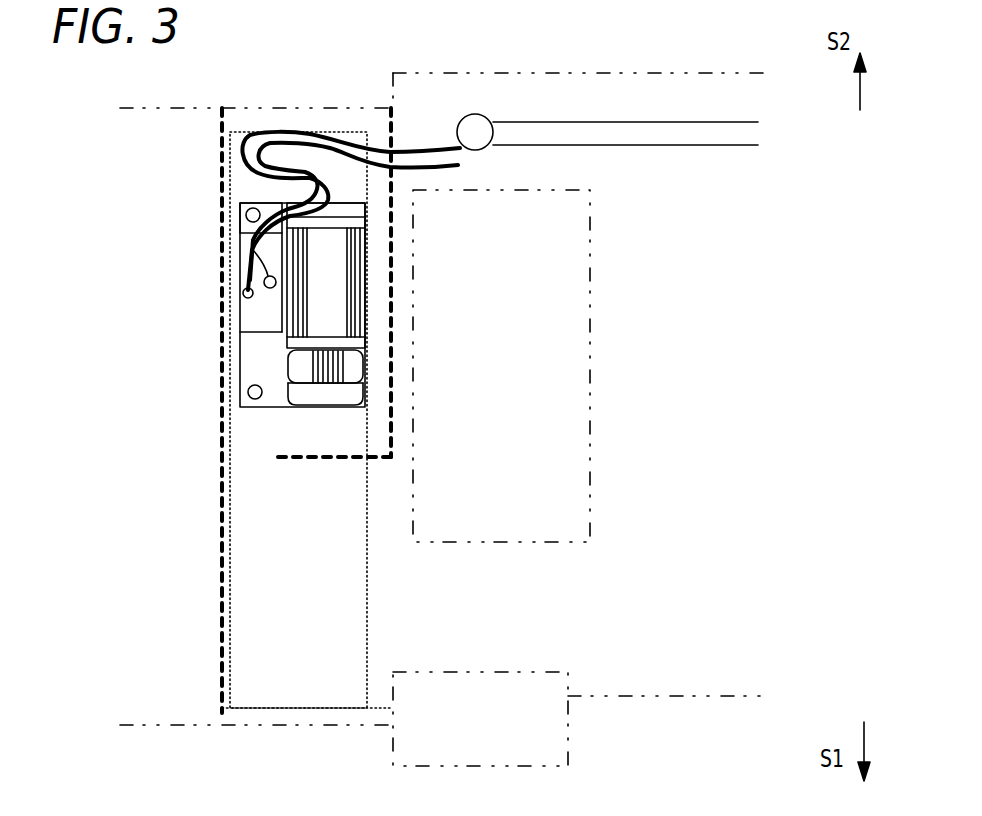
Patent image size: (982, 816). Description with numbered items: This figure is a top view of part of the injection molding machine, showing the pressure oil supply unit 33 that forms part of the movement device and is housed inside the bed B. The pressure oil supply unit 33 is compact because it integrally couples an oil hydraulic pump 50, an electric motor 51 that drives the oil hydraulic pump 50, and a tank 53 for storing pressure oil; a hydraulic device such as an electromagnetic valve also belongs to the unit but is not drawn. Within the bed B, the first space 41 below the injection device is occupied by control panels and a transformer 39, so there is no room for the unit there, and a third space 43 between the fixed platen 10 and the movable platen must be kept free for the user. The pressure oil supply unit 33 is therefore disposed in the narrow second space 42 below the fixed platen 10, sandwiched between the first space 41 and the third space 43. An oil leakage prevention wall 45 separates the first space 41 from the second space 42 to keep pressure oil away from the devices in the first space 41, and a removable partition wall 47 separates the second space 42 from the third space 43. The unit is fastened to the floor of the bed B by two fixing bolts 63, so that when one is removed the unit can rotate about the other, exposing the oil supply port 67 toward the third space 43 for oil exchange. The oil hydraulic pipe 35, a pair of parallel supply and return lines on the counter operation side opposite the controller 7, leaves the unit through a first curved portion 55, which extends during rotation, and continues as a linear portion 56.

The controller 7 is at (555, 738).
The fixed platen 10 is at (295, 692).
The pressure oil supply unit 33 is at (168, 317).
The oil hydraulic pipe 35 is at (708, 108).
The transformer 39 is at (590, 298).
The first space 41 is at (672, 545).
The second space 42 is at (295, 443).
The third space 43 is at (184, 695).
The oil leakage prevention wall 45 is at (393, 433).
The partition wall 47 is at (223, 573).
The oil hydraulic pump 50 is at (243, 282).
The electric motor 51 is at (365, 307).
The tank 53 is at (250, 360).
The first curved portion 55 is at (332, 137).
The linear portion 56 is at (630, 122).
The fixing bolts 63 is at (248, 208).
The oil supply port 67 is at (250, 273).
The bed B is at (735, 697).